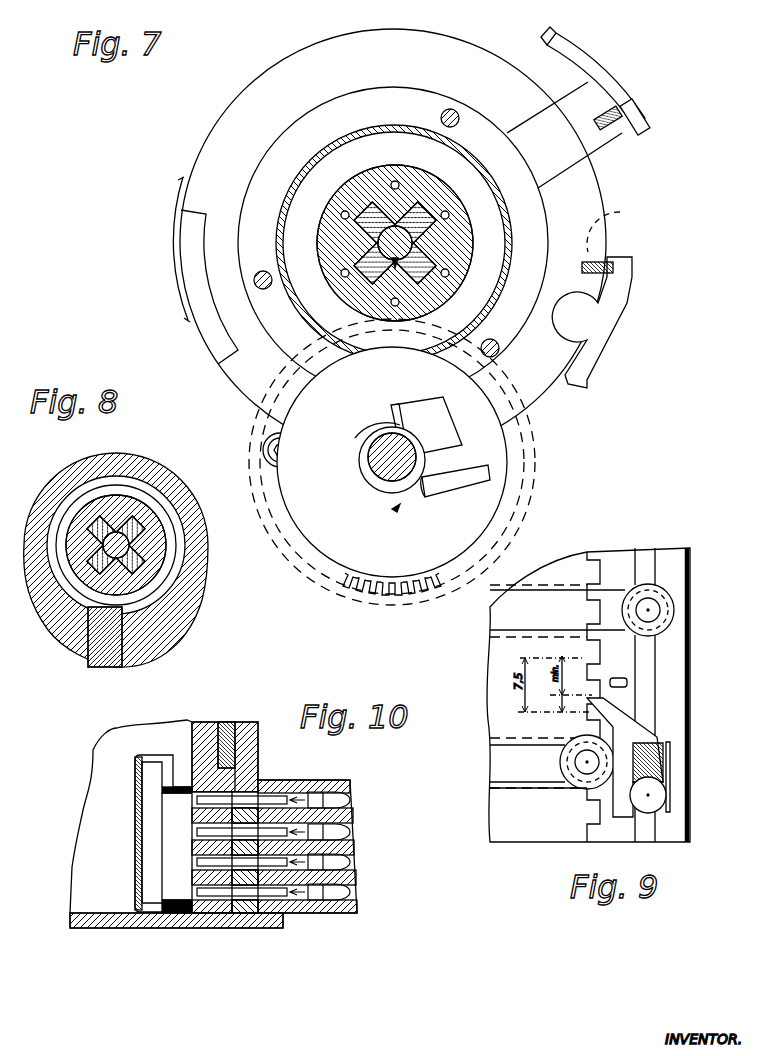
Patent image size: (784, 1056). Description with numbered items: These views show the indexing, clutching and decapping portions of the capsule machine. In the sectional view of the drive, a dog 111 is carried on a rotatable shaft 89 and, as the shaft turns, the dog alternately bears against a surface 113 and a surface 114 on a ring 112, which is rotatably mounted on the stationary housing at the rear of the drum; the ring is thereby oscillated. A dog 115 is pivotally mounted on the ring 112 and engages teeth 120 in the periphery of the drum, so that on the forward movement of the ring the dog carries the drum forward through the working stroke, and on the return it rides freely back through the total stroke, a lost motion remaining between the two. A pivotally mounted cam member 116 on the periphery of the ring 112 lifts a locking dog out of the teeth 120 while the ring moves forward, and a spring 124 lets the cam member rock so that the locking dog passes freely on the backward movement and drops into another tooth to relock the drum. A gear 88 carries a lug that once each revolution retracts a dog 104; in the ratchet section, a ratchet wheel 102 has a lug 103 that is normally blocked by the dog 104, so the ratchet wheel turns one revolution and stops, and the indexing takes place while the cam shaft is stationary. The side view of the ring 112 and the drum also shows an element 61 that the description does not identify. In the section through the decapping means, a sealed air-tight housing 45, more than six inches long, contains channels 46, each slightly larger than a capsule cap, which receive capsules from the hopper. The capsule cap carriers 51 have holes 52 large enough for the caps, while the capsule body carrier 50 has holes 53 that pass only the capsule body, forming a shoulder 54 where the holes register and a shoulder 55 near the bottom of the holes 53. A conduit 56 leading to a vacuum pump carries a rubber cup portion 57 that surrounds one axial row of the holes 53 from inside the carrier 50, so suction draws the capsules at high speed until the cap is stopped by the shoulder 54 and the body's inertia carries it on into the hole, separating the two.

In FIG. 7, the ring 112 is at (246, 381).
In FIG. 9, the ring 112 is at (677, 562).
In FIG. 7, the dog 115 is at (568, 40).
In FIG. 9, the dog 115 is at (627, 705).
In FIG. 7, the spring 124 is at (607, 213).
In FIG. 7, the cam member 116 is at (620, 301).
In FIG. 7, the gear 88 is at (401, 570).
In FIG. 7, the shaft 89 is at (383, 470).
In FIG. 7, the dog 111 is at (420, 414).
In FIG. 7, the surface 113 is at (393, 412).
In FIG. 7, the surface 114 is at (418, 499).
In FIG. 8, the ratchet wheel 102 is at (158, 578).
In FIG. 8, the lug 103 is at (182, 553).
In FIG. 8, the dog 104 is at (100, 653).
In FIG. 9, the teeth 120 is at (595, 555).
In FIG. 9, the roller 61 is at (674, 606).
In FIG. 9, the conduit 56 is at (530, 789).
In FIG. 10, the conduit 56 is at (137, 785).
In FIG. 10, the holes 52 is at (254, 792).
In FIG. 10, the rubber cup portion 57 is at (152, 932).
In FIG. 10, the channels 46 is at (357, 900).
In FIG. 10, the housing 45 is at (345, 917).
In FIG. 10, the shoulder 55 is at (175, 930).
In FIG. 10, the holes 53 is at (193, 930).
In FIG. 10, the capsule body carrier 50 is at (210, 930).
In FIG. 10, the shoulder 54 is at (231, 930).
In FIG. 10, the capsule cap carriers 51 is at (257, 930).